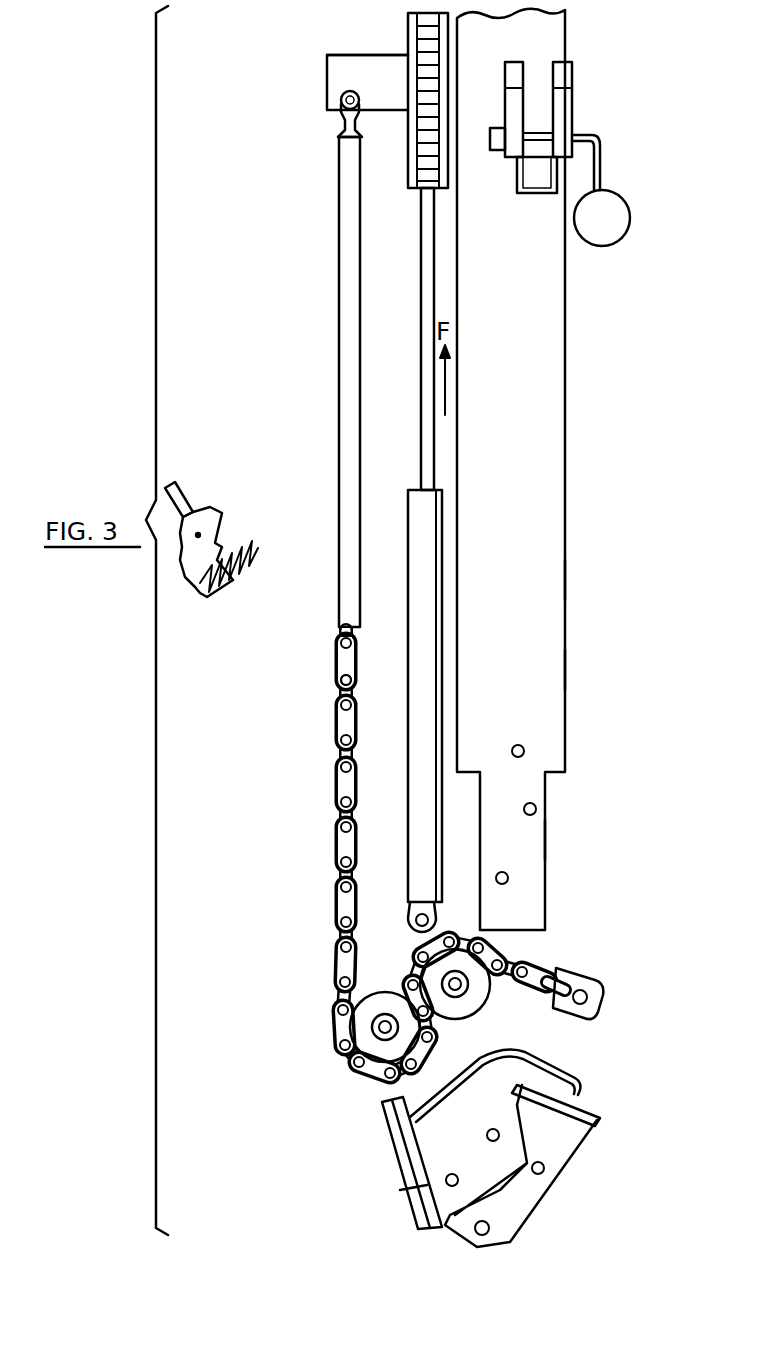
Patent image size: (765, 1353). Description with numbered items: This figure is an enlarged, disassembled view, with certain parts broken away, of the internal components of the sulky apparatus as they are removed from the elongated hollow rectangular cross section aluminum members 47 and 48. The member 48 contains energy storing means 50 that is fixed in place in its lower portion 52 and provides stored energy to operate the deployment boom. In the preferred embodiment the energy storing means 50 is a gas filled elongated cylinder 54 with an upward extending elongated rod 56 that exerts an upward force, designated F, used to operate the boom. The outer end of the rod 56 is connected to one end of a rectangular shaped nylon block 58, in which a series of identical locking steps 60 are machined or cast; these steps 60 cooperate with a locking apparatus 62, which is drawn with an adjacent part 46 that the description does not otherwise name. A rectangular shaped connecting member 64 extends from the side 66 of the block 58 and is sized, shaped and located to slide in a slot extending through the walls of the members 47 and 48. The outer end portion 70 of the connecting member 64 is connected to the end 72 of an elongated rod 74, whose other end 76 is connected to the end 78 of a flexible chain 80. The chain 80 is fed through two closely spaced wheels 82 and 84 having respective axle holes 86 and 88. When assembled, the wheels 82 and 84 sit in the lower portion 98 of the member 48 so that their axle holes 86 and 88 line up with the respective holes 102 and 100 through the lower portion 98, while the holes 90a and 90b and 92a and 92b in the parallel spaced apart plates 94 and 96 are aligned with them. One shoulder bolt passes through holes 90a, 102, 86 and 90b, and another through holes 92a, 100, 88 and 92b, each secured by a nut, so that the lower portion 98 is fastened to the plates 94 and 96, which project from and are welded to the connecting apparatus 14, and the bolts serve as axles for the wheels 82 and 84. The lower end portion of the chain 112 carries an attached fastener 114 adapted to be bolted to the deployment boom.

The connecting apparatus 14 is at (408, 1170).
The knob 46 is at (610, 228).
The elongated hollow rectangular cross section aluminum member 47 is at (477, 457).
The elongated hollow rectangular cross section aluminum member 48 is at (528, 588).
The energy storing means 50 is at (393, 711).
The lower portion of the member 48 52 is at (543, 673).
The gas filled elongated cylinder 54 is at (425, 700).
The elongated rod 56 is at (437, 292).
The rectangular shaped nylon block 58 is at (405, 50).
The locking steps 60 is at (425, 137).
The locking apparatus 62 is at (414, 329).
The rectangular shaped connecting member 64 is at (340, 65).
The side of the block 66 is at (373, 114).
The outer end portion of the connecting member 70 is at (341, 96).
The end of the elongated rod 72 is at (340, 140).
The elongated rod 74 is at (338, 315).
The other end of the elongated rod 76 is at (337, 633).
The end of the flexible chain 78 is at (335, 682).
The flexible chain 80 is at (415, 852).
The wheel 82 is at (348, 1046).
The wheel 84 is at (467, 967).
The axle hole 86 is at (382, 1040).
The axle hole 88 is at (483, 930).
The hole 90a is at (483, 1228).
The hole 90b is at (448, 1180).
The hole 92a is at (542, 1168).
The hole 92b is at (493, 1135).
The parallel plate 94 is at (537, 1137).
The parallel plate 96 is at (530, 1065).
The lower portion of the member 48 98 is at (525, 840).
The hole 100 is at (536, 805).
The hole 102 is at (509, 878).
The lower end portion of the chain 112 is at (538, 968).
The fastener 114 is at (597, 990).